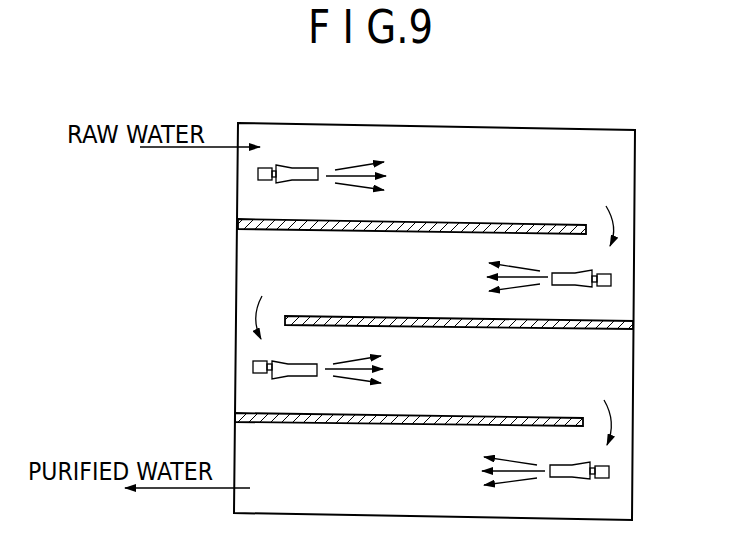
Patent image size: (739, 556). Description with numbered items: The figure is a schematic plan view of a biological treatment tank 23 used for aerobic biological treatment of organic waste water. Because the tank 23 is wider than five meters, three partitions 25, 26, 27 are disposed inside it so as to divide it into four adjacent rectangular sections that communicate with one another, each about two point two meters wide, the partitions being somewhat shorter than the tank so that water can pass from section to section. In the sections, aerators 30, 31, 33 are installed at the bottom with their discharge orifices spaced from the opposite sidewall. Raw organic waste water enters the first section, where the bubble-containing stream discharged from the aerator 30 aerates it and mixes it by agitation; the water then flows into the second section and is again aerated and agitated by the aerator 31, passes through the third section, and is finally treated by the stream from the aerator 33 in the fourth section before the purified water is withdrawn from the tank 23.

The biological treatment tank 23 is at (572, 158).
The partition 25 is at (461, 218).
The partition 26 is at (401, 317).
The partition 27 is at (297, 423).
The aerator 30 is at (305, 170).
The aerator 31 is at (580, 272).
The aerator 33 is at (292, 366).